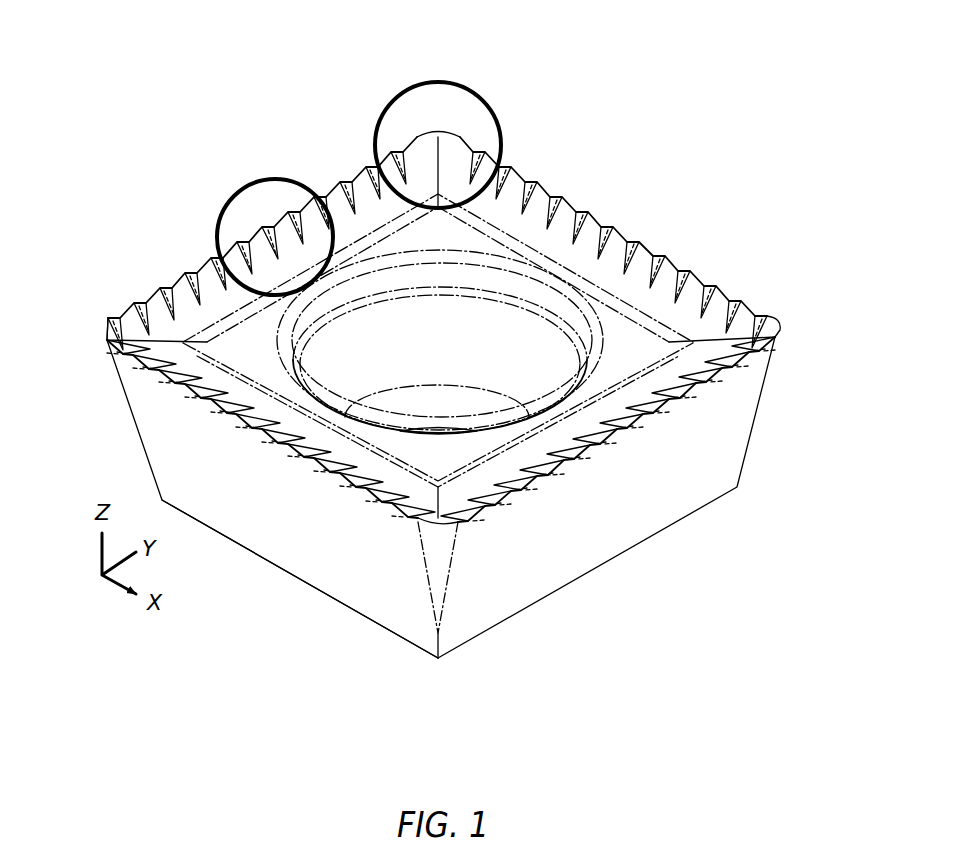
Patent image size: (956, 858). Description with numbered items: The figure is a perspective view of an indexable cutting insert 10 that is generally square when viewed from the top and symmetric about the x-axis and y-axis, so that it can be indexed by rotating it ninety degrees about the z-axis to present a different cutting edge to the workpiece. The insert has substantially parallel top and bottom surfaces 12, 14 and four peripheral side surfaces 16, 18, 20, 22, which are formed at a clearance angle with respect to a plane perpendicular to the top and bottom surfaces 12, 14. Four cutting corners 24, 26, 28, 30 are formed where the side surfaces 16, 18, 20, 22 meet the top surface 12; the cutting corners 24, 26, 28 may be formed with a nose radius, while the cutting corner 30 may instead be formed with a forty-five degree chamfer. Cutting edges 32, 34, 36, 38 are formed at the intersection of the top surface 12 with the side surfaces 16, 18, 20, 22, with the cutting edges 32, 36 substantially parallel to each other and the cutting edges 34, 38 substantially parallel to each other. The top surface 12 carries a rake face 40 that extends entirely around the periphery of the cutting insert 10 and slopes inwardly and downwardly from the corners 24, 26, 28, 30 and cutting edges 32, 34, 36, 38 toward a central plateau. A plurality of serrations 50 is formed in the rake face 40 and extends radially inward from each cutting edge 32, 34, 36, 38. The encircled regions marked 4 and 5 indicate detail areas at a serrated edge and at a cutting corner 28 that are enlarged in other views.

The indexable cutting insert 10 is at (700, 99).
The top surface 12 is at (471, 240).
The bottom surface 14 is at (352, 619).
The peripheral side surface 16 is at (279, 541).
The peripheral side surface 18 is at (598, 542).
The peripheral side surface 20 is at (675, 240).
The peripheral side surface 22 is at (187, 253).
The cutting corner 24 is at (439, 531).
The cutting corner 26 is at (790, 323).
The cutting corner 28 is at (447, 121).
The cutting corner 30 is at (101, 328).
The cutting edge 32 is at (246, 428).
The cutting edge 34 is at (653, 413).
The cutting edge 36 is at (602, 206).
The cutting edge 38 is at (276, 227).
The rake face 40 is at (687, 308).
The serrations 50 is at (529, 489).
The detail view circle FIG. 4 is at (234, 196).
The detail view circle FIG. 5 is at (395, 99).